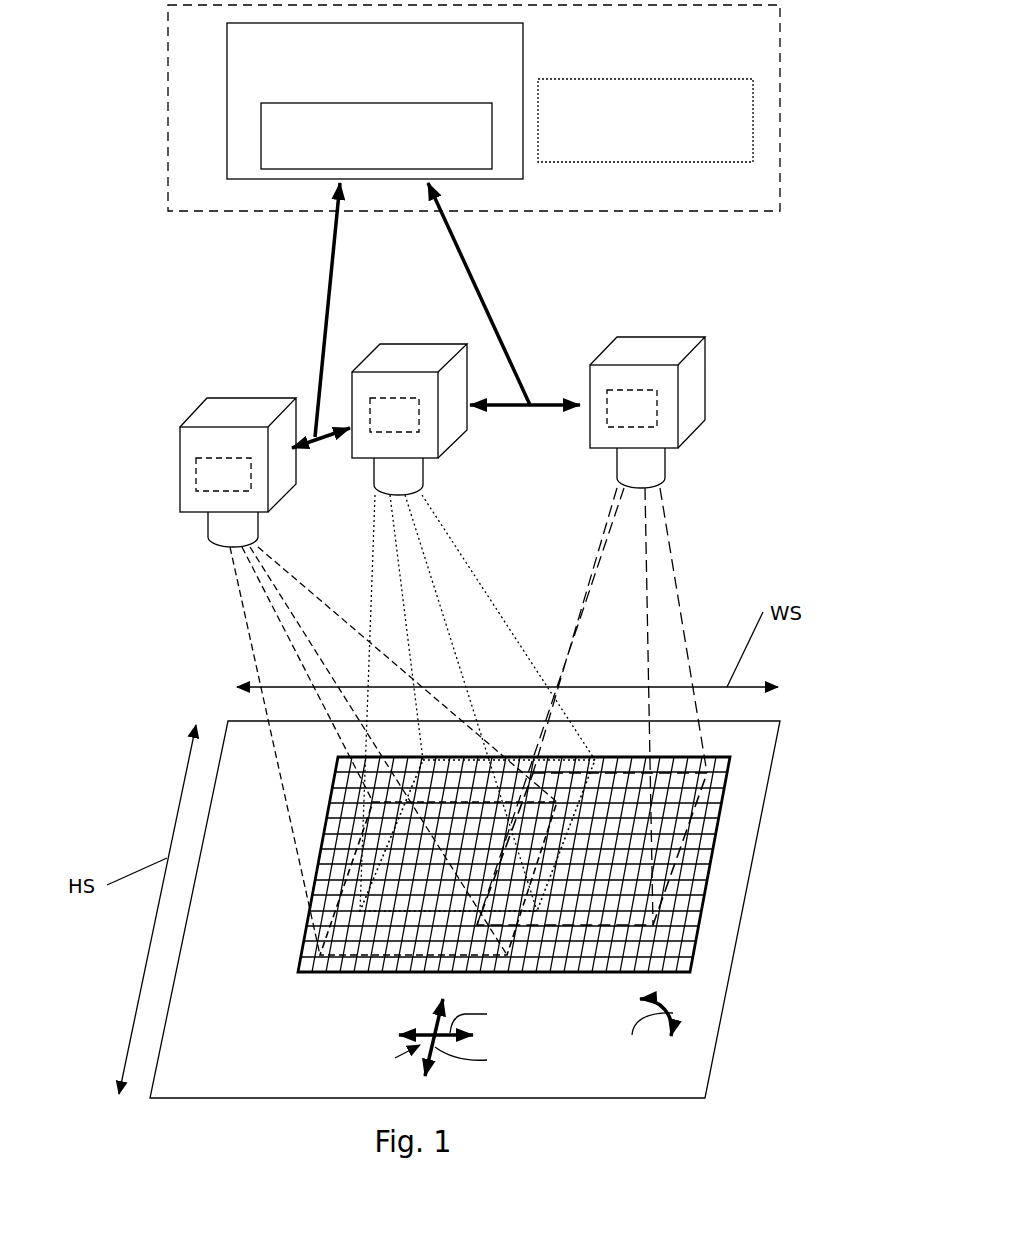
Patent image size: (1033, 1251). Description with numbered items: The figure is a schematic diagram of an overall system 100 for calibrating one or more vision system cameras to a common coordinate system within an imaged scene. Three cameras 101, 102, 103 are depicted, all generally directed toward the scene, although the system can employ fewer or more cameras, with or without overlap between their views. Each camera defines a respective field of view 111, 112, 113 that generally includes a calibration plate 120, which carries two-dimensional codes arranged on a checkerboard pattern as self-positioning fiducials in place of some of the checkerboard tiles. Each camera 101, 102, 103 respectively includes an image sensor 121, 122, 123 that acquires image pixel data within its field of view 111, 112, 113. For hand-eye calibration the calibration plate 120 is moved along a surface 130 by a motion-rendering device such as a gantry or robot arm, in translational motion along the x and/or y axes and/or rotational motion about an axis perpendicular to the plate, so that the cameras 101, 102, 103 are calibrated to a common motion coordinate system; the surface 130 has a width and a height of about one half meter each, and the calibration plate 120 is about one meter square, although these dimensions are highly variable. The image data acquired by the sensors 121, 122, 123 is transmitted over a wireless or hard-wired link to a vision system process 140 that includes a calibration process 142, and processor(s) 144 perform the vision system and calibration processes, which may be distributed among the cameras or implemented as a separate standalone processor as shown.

The system 100 is at (105, 97).
The camera 101 is at (259, 421).
The camera 102 is at (426, 367).
The camera 103 is at (671, 357).
The field of view 111 is at (321, 959).
The field of view 112 is at (428, 917).
The field of view 113 is at (690, 838).
The calibration plate 120 is at (303, 933).
The image sensor 121 is at (223, 474).
The image sensor 122 is at (394, 415).
The image sensor 123 is at (632, 408).
The surface 130 is at (565, 1022).
The vision system process 140 is at (355, 96).
The calibration process 142 is at (361, 161).
The processor(s) 144 is at (626, 151).